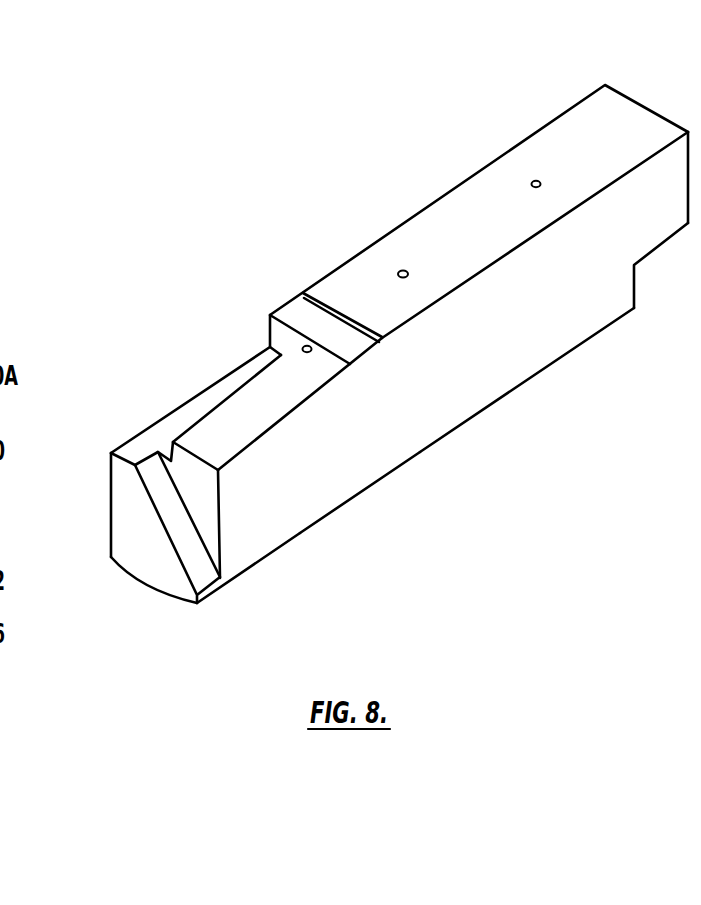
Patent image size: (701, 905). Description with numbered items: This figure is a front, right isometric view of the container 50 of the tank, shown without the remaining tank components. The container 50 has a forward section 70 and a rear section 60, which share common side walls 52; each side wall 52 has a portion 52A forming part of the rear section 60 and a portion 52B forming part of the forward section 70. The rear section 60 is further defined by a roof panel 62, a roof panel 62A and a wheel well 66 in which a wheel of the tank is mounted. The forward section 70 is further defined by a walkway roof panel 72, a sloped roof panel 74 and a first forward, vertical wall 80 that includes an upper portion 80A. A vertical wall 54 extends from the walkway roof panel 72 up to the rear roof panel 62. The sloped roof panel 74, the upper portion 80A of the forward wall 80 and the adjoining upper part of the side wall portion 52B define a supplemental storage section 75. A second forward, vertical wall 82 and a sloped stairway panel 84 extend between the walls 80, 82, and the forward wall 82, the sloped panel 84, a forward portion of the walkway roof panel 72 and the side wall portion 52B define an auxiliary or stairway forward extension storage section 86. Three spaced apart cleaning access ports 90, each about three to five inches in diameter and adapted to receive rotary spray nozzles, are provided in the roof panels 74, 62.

The container 50 is at (383, 116).
The side walls 52 is at (496, 376).
The side wall portion 52A is at (580, 335).
The side wall portion 52B is at (263, 542).
The vertical wall 54 is at (279, 337).
The rear section 60 is at (622, 347).
The roof panel 62 is at (580, 125).
The roof panel 62A is at (308, 317).
The wheel well 66 is at (654, 279).
The forward section 70 is at (328, 542).
The walkway roof panel 72 is at (235, 380).
The sloped roof panel 74 is at (330, 385).
The supplemental storage section 75 is at (304, 417).
The first forward vertical wall 80 is at (200, 502).
The upper portion of forward wall 80A is at (190, 460).
The second forward vertical wall 82 is at (125, 484).
The sloped stairway panel 84 is at (192, 558).
The stairway forward extension storage section 86 is at (218, 611).
The cleaning access ports 90 is at (312, 349).